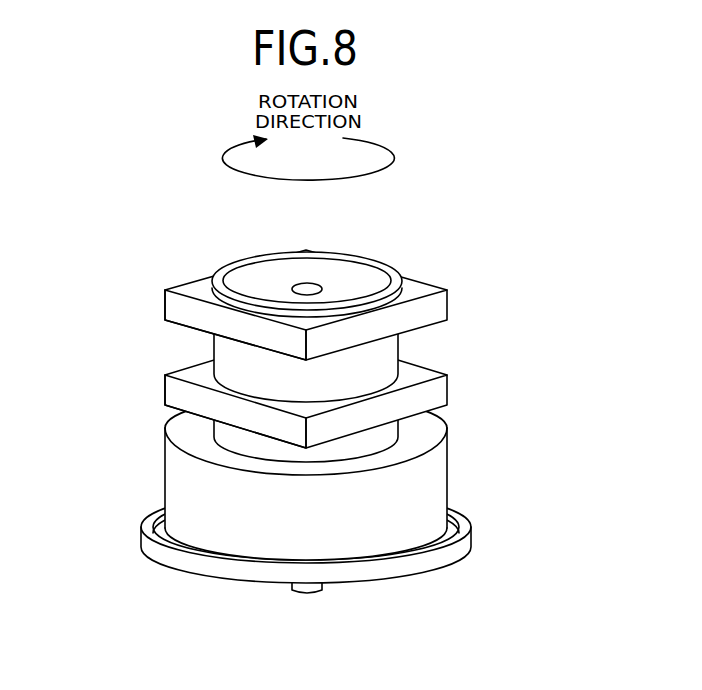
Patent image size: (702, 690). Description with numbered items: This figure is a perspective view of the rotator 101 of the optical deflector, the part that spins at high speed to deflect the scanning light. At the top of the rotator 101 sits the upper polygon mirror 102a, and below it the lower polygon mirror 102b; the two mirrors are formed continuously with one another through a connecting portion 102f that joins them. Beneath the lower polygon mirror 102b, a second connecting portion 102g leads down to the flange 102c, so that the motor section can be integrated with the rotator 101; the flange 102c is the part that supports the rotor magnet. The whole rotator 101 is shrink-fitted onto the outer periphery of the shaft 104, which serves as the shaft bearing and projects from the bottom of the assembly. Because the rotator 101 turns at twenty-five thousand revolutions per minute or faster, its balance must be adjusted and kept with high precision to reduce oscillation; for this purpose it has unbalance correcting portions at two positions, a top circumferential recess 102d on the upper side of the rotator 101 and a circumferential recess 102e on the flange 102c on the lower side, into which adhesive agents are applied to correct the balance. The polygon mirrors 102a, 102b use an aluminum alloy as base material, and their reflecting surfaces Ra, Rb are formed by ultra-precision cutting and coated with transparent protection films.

The rotator 101 is at (185, 224).
The polygon mirror 102a is at (415, 288).
The polygon mirror 102b is at (416, 374).
The flange 102c is at (382, 495).
The top circumferential recess 102d is at (262, 257).
The circumferential recess 102e is at (238, 560).
The connecting portion 102f is at (352, 371).
The connecting portion 102g is at (233, 432).
The shaft 104 is at (305, 595).
The reflecting surface Ra is at (173, 303).
The reflecting surface Rb is at (173, 387).